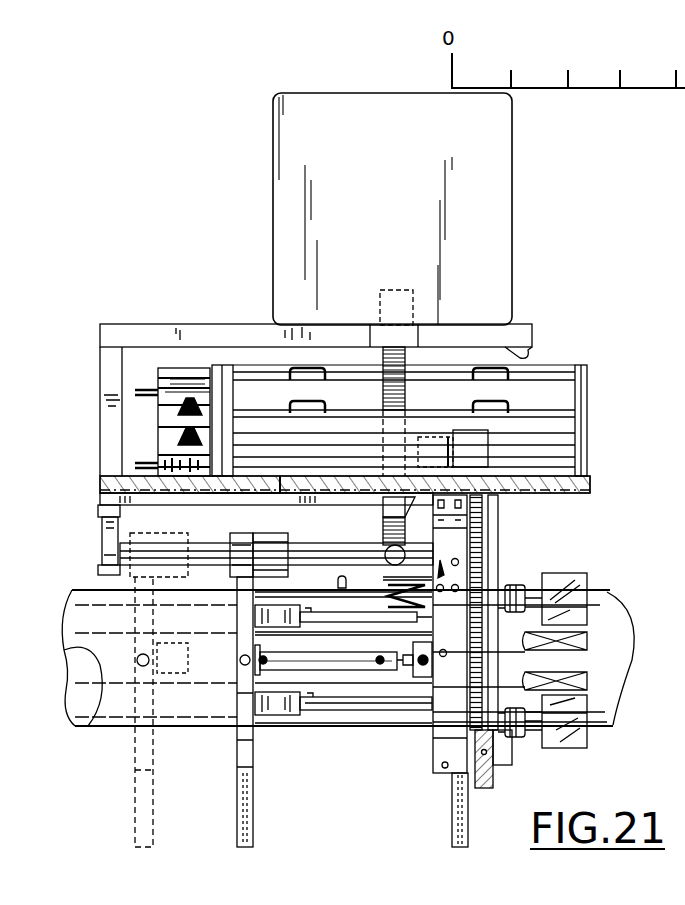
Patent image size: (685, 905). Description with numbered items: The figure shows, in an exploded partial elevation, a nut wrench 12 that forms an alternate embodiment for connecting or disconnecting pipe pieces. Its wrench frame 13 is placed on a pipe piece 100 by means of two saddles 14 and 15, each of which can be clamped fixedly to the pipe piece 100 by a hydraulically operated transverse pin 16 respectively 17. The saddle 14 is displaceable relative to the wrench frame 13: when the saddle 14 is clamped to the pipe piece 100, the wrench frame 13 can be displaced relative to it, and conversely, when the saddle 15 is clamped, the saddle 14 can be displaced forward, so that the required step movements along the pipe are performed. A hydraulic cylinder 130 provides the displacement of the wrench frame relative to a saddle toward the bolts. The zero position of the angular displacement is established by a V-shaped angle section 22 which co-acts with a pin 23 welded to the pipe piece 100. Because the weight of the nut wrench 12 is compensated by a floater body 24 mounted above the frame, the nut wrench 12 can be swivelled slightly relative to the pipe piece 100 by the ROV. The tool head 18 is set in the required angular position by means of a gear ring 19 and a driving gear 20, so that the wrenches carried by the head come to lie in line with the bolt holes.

The nut wrench 12 is at (560, 294).
The wrench frame 13 is at (92, 472).
The saddle 14 is at (254, 814).
The saddle 15 is at (452, 806).
The transverse pin 16 is at (241, 664).
The transverse pin 17 is at (425, 664).
The tool head 18 is at (445, 746).
The gear ring 19 is at (485, 562).
The driving gear 20 is at (490, 455).
The V-shaped angle section 22 is at (443, 590).
The pin 23 is at (340, 582).
The floater body 24 is at (486, 214).
The pipe piece 100 is at (345, 727).
The hydraulic cylinder 130 is at (300, 664).